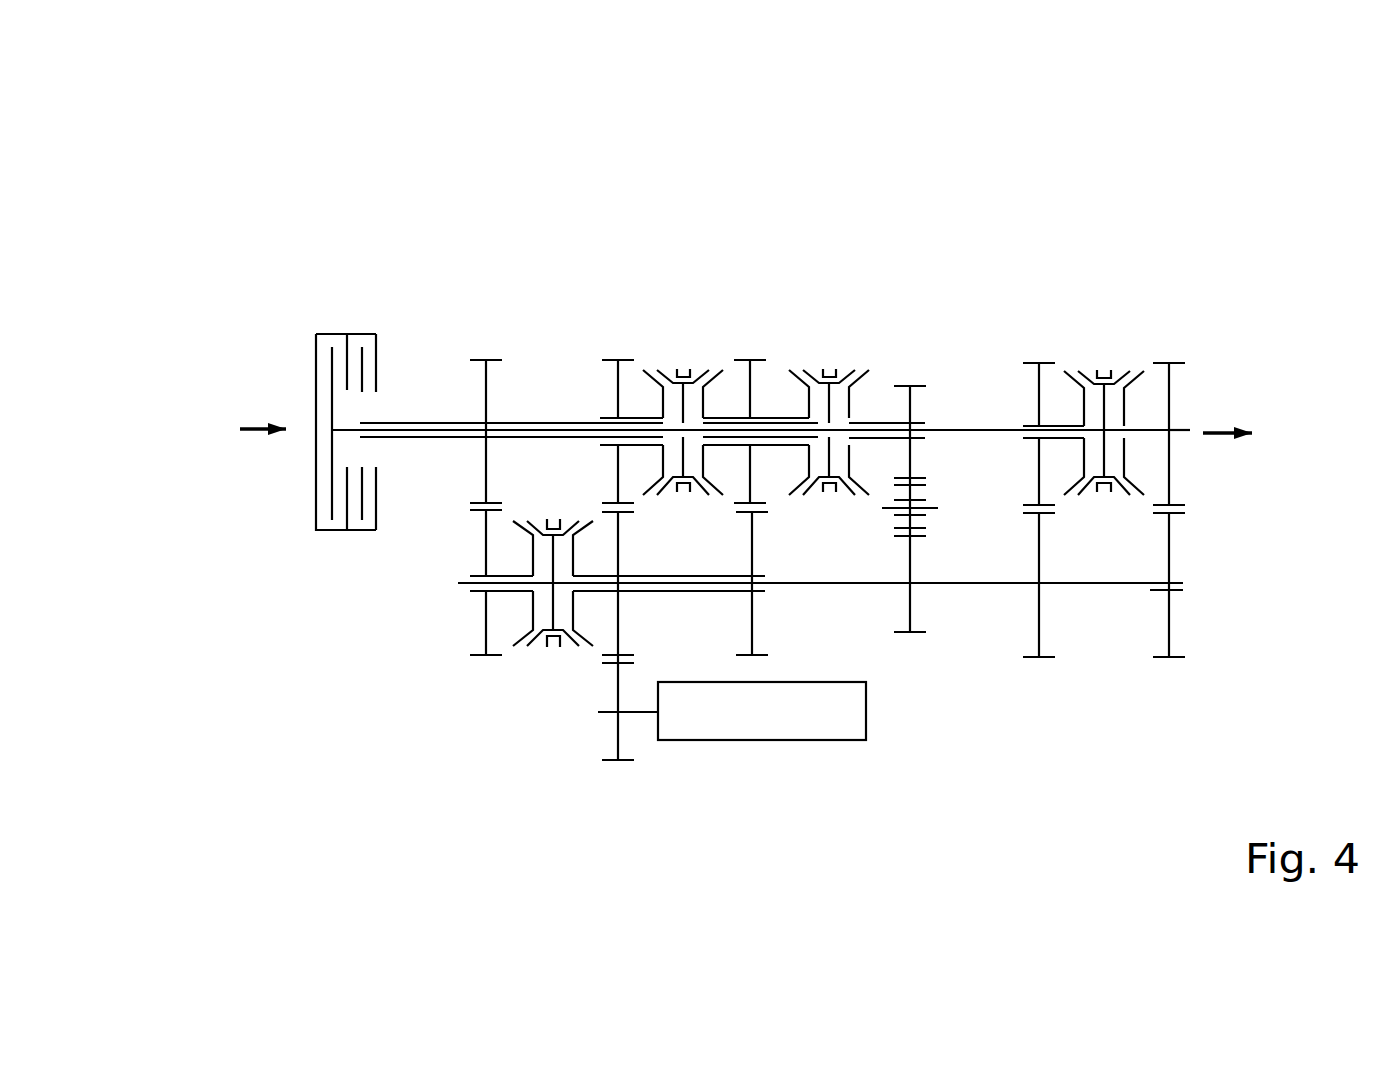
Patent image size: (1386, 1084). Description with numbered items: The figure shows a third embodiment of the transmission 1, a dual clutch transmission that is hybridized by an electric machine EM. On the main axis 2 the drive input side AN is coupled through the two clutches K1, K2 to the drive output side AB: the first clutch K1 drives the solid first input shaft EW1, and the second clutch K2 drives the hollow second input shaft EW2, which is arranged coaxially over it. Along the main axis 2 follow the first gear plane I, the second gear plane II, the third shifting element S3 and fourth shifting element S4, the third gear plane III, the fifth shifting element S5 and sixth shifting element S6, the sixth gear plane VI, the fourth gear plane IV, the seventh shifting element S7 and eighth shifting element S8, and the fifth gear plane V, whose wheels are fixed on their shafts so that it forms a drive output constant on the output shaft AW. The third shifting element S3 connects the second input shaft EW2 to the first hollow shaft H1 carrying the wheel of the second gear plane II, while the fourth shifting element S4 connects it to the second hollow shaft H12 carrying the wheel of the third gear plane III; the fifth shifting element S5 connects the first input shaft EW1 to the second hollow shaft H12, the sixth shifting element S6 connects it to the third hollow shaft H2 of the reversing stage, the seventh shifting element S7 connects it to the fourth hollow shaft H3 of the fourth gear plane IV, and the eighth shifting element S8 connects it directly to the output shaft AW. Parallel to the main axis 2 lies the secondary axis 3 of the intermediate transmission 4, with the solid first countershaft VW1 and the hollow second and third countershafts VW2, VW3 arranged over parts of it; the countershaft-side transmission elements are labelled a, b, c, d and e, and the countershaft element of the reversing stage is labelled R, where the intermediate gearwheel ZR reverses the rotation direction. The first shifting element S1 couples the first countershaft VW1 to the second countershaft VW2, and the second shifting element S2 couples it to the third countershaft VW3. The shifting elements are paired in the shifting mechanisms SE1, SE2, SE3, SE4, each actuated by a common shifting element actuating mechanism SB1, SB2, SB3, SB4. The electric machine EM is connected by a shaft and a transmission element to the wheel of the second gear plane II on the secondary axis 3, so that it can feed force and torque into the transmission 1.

The transmission 1 is at (273, 232).
The main axis 2 is at (228, 428).
The secondary axis 3 is at (1190, 585).
The intermediate transmission 4 is at (458, 583).
The first clutch K1 is at (324, 322).
The second clutch K2 is at (358, 322).
The first input shaft EW1 is at (348, 430).
The second input shaft EW2 is at (415, 440).
The drive input side AN is at (263, 408).
The drive output side AB is at (1227, 411).
The output shaft AW is at (1195, 440).
The first hollow shaft H1 is at (605, 418).
The second hollow shaft H12 is at (775, 415).
The third hollow shaft H2 is at (915, 423).
The fourth hollow shaft H3 is at (1025, 425).
The first shifting element actuating mechanism SB1 is at (556, 650).
The second shifting element actuating mechanism SB2 is at (680, 358).
The third shifting element actuating mechanism SB3 is at (833, 358).
The fourth shifting element actuating mechanism SB4 is at (1107, 358).
The first shifting mechanism SE1 is at (555, 688).
The second shifting mechanism SE2 is at (661, 305).
The third shifting mechanism SE3 is at (842, 305).
The fourth shifting mechanism SE4 is at (1103, 305).
The first shifting element S1 is at (522, 665).
The second shifting element S2 is at (586, 665).
The third shifting element S3 is at (653, 357).
The fourth shifting element S4 is at (713, 357).
The fifth shifting element S5 is at (799, 357).
The sixth shifting element S6 is at (858, 357).
The seventh shifting element S7 is at (1073, 357).
The eighth shifting element S8 is at (1134, 357).
The first countershaft VW1 is at (462, 592).
The second countershaft VW2 is at (477, 593).
The third countershaft VW3 is at (765, 592).
The electric machine EM is at (720, 737).
The intermediate gearwheel ZR is at (912, 522).
The first gear plane I is at (486, 345).
The second gear plane II is at (618, 345).
The third gear plane III is at (750, 345).
The fourth gear plane IV is at (1039, 345).
The fifth gear plane V is at (1169, 345).
The sixth gear plane VI is at (907, 345).
The reverse gear R is at (910, 420).
The countershaft gear a is at (486, 432).
The countershaft gear b is at (618, 432).
The countershaft gear c is at (752, 432).
The countershaft gear d is at (1039, 433).
The countershaft gear e is at (1169, 433).